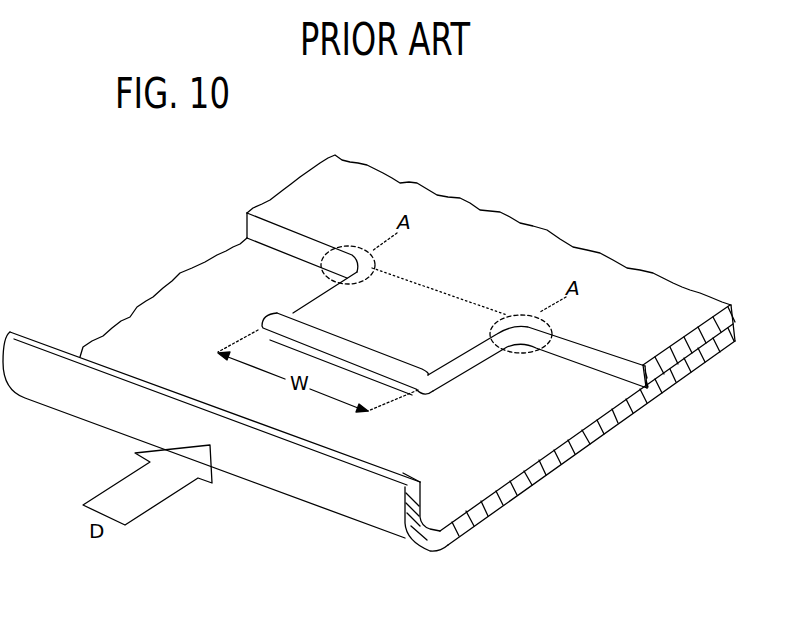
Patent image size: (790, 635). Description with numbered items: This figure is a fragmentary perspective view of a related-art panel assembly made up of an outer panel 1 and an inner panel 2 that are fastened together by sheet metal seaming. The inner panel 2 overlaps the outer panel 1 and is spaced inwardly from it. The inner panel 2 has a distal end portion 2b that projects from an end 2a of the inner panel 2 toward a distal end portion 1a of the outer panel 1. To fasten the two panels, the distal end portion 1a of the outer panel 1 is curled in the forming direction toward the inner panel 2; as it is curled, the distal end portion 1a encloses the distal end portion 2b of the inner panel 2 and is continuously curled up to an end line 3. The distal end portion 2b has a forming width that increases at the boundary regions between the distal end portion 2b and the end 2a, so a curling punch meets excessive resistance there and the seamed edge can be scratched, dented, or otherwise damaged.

The outer panel 1 is at (482, 519).
The distal end portion of the outer panel 1a is at (403, 473).
The inner panel 2 is at (607, 380).
The end of the inner panel 2a is at (580, 362).
The distal end portion of the inner panel 2b is at (452, 351).
The end line 3 is at (450, 293).